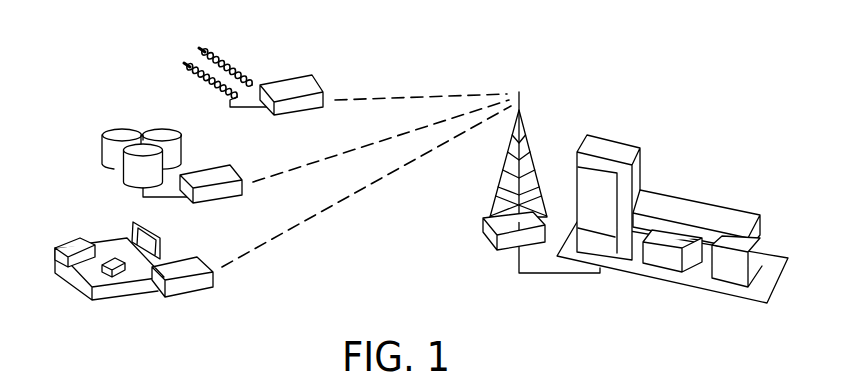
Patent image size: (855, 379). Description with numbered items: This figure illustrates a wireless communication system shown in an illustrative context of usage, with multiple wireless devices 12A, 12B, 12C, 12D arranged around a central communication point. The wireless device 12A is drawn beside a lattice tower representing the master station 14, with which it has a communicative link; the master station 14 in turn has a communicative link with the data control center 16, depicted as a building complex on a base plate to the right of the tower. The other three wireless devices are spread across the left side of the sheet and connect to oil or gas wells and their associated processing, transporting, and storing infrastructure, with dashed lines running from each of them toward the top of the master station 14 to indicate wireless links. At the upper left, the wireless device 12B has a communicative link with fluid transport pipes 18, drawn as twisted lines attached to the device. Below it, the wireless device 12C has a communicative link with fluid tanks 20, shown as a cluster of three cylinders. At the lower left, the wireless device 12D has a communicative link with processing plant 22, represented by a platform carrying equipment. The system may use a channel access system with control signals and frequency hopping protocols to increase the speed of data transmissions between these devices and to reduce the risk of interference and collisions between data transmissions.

The wireless device 12A is at (492, 240).
The wireless device 12B is at (292, 85).
The wireless device 12C is at (210, 175).
The wireless device 12D is at (192, 285).
The master station 14 is at (527, 137).
The data control center 16 is at (693, 212).
The fluid transport pipes 18 is at (228, 62).
The fluid tanks 20 is at (122, 133).
The processing plant 22 is at (73, 243).